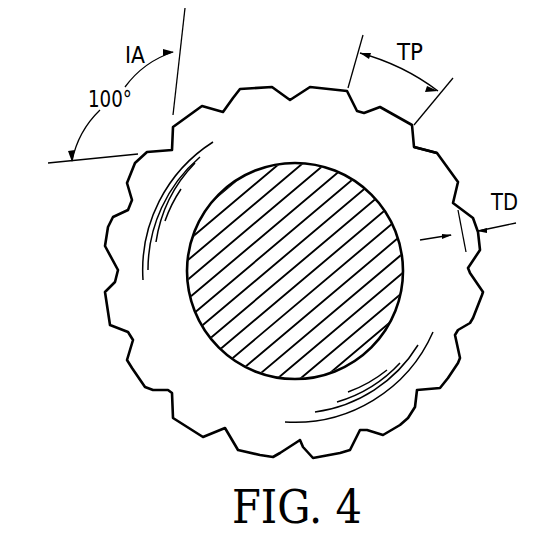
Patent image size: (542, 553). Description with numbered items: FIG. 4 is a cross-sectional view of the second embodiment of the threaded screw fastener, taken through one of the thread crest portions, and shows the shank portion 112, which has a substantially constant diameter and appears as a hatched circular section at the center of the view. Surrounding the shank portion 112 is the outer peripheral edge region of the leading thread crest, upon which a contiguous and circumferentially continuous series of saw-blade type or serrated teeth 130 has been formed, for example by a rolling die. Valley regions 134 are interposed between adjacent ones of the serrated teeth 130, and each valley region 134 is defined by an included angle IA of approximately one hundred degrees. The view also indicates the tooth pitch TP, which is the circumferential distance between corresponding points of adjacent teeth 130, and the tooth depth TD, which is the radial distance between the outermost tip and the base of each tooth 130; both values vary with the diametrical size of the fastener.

The saw-blade type or serrated teeth 130 is at (250, 88).
The valley regions 134 is at (419, 148).
The shank portion 112 is at (308, 283).